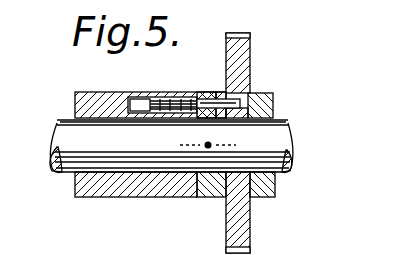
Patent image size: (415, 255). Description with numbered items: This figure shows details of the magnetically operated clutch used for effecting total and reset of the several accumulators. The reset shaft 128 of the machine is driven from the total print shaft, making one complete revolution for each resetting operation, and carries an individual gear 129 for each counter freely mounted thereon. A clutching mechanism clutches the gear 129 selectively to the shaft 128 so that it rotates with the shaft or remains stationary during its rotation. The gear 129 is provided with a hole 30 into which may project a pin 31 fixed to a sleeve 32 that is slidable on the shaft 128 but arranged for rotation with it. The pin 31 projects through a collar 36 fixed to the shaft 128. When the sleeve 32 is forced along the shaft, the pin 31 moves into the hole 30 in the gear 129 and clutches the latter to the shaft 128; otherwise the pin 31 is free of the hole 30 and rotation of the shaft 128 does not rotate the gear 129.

The hole 30 is at (250, 93).
The pin 31 is at (211, 93).
The sleeve 32 is at (97, 95).
The collar 36 is at (213, 195).
The reset shaft 128 is at (57, 123).
The gear 129 is at (243, 54).